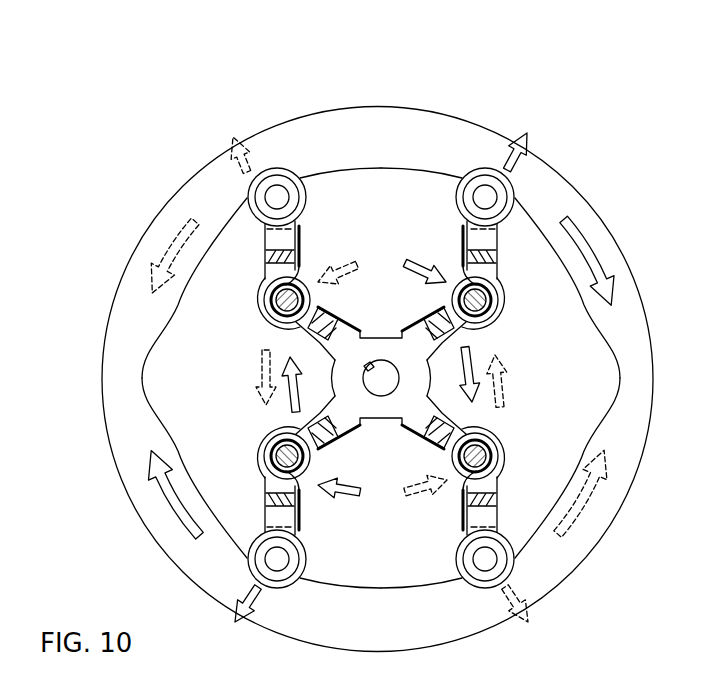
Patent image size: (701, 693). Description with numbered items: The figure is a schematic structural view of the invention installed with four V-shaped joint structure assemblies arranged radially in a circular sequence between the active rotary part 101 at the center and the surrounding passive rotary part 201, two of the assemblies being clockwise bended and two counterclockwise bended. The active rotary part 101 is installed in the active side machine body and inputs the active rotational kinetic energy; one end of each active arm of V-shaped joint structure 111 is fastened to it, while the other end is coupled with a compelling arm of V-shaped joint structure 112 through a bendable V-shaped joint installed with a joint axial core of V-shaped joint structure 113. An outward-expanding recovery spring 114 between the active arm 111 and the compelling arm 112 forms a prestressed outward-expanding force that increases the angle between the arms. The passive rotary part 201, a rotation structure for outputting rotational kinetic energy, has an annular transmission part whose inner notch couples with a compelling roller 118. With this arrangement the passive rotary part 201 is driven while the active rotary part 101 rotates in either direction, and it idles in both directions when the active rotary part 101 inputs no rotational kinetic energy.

The active rotary part 101 is at (380, 381).
The active arm of V-shaped joint structure 111 is at (345, 338).
The compelling arm of V-shaped joint structure 112 is at (263, 239).
The joint axial core of V-shaped joint structure 113 is at (287, 300).
The outward-expanding recovery spring 114 is at (297, 247).
The compelling roller 118 is at (305, 188).
The passive rotary part 201 is at (423, 130).